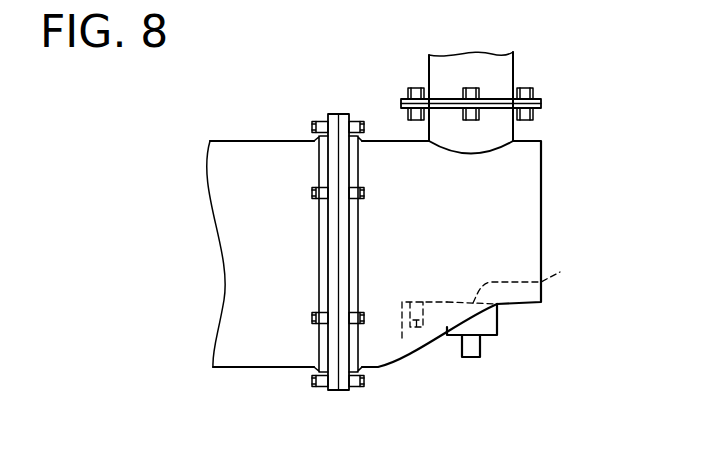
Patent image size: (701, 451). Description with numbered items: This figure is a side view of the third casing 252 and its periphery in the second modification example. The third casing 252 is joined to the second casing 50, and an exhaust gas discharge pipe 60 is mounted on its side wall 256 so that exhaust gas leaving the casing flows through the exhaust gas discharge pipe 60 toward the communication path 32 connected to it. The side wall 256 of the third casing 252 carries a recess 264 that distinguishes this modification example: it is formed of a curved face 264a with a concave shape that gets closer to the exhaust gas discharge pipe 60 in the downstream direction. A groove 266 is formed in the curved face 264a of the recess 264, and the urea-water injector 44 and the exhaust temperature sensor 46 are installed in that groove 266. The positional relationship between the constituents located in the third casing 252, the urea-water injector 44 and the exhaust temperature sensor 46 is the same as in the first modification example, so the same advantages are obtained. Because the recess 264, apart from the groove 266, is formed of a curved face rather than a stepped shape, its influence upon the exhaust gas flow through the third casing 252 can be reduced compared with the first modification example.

The communication path 32 is at (502, 73).
The urea-water injector 44 is at (483, 328).
The exhaust temperature sensor 46 is at (420, 333).
The second casing 50 is at (260, 145).
The exhaust gas discharge pipe 60 is at (503, 130).
The third casing 252 is at (518, 208).
The side wall 256 is at (383, 147).
The recess 264 is at (528, 323).
The curved face 264a is at (432, 332).
The groove 266 is at (541, 280).